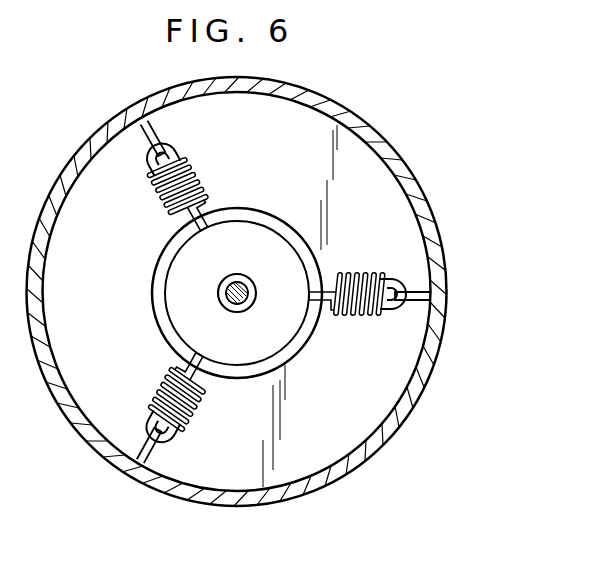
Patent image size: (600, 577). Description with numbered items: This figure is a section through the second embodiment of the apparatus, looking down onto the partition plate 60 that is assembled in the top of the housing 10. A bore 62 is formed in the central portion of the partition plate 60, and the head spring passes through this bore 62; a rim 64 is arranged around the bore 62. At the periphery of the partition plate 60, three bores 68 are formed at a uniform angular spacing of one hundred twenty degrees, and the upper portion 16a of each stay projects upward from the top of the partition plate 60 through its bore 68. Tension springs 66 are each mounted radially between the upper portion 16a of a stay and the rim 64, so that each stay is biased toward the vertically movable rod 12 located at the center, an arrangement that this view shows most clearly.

The housing 10 is at (396, 136).
The partition plate 60 is at (330, 456).
The bore 62 is at (293, 263).
The rim 64 is at (293, 358).
The rod 12 is at (249, 288).
The tension springs 66 is at (203, 182).
The upper portion of stay 16a is at (170, 150).
The bores 68 is at (148, 123).